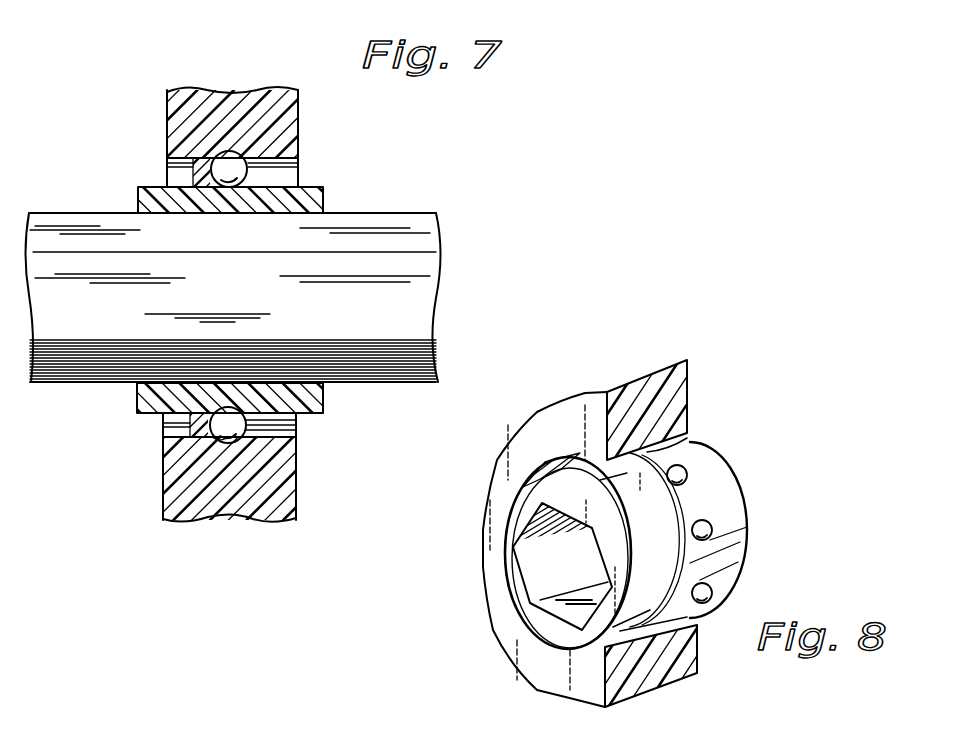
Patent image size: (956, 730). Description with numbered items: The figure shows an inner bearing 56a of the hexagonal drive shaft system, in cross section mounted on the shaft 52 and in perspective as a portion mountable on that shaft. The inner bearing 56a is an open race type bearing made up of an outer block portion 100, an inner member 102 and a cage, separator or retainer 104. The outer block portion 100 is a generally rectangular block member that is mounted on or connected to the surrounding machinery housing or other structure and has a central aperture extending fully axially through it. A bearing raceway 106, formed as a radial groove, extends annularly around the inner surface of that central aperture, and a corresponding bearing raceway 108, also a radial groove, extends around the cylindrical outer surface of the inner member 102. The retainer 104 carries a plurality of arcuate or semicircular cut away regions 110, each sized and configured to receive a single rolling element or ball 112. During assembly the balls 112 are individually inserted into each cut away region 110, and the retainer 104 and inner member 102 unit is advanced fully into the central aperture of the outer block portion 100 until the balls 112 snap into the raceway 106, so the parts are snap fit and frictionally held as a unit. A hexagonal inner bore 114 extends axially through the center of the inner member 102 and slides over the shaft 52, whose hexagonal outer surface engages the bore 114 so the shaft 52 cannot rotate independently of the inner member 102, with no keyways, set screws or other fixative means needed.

In FIG. 7, the shaft 52 is at (407, 281).
In FIG. 7, the inner bearing 56a is at (342, 178).
In FIG. 8, the inner bearing 56a is at (768, 532).
In FIG. 7, the outer block portion 100 is at (227, 100).
In FIG. 8, the outer block portion 100 is at (670, 363).
In FIG. 7, the inner member 102 is at (137, 194).
In FIG. 8, the inner member 102 is at (508, 532).
In FIG. 7, the retainer 104 is at (163, 430).
In FIG. 8, the retainer 104 is at (696, 643).
In FIG. 7, the bearing raceway 106 is at (211, 160).
In FIG. 8, the bearing raceway 106 is at (690, 443).
In FIG. 7, the bearing raceway 108 is at (322, 395).
In FIG. 7, the cut away region 110 is at (212, 437).
In FIG. 7, the ball 112 is at (237, 190).
In FIG. 8, the ball 112 is at (687, 475).
In FIG. 8, the hexagonal inner bore 114 is at (542, 587).